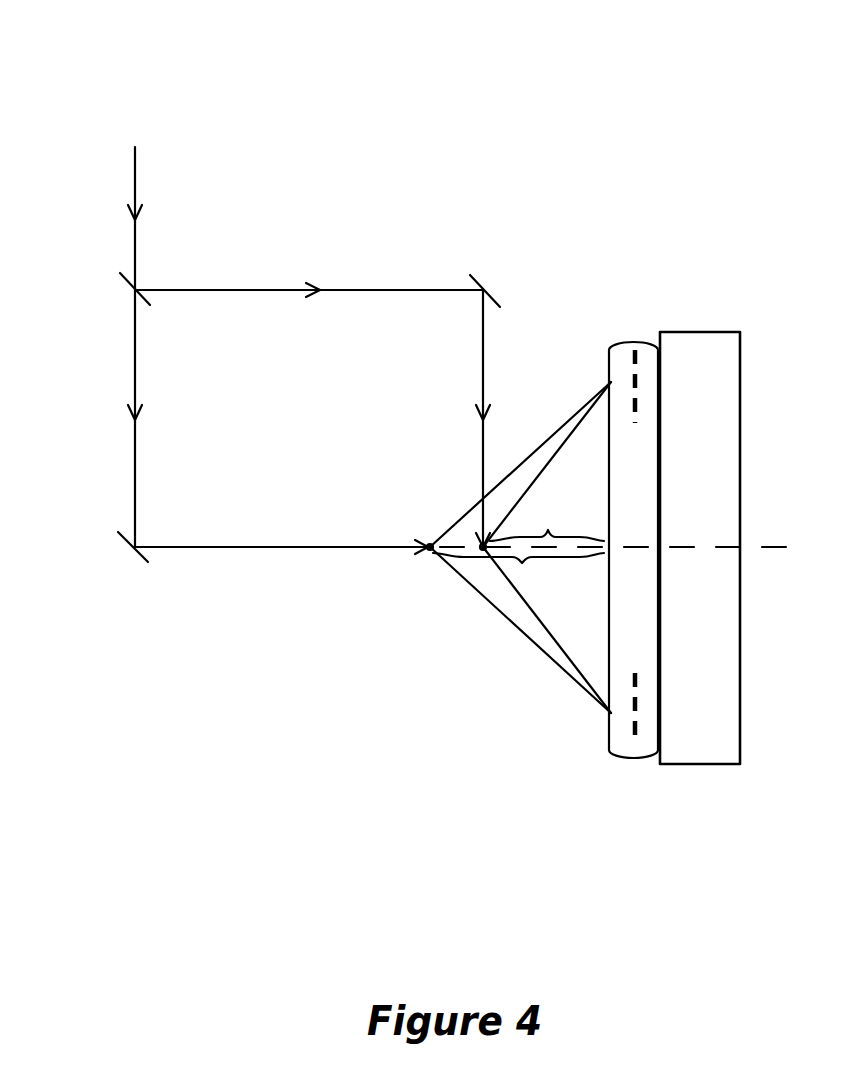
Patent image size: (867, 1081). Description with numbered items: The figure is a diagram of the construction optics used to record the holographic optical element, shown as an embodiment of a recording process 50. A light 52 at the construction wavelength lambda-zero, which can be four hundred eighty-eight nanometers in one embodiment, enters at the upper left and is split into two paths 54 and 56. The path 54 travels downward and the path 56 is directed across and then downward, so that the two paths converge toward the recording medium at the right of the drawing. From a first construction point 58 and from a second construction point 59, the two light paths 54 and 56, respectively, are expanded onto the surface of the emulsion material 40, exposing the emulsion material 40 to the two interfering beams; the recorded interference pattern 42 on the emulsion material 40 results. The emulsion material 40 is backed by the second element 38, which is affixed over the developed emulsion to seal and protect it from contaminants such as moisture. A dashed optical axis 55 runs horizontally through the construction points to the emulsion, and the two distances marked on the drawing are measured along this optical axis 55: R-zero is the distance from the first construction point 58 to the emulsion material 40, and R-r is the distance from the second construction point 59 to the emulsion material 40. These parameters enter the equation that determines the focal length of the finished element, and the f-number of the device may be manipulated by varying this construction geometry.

The recording process 50 is at (662, 128).
The light 52 is at (151, 200).
The first light path 54 is at (133, 480).
The second light path 56 is at (340, 290).
The first construction point 58 is at (412, 522).
The second construction point 59 is at (446, 511).
The interference pattern 42 is at (626, 348).
The emulsion material 40 is at (628, 752).
The second element 38 is at (710, 348).
The optical axis 55 is at (643, 550).